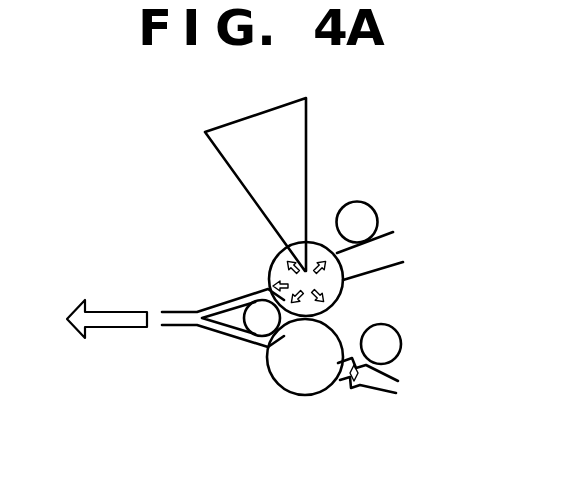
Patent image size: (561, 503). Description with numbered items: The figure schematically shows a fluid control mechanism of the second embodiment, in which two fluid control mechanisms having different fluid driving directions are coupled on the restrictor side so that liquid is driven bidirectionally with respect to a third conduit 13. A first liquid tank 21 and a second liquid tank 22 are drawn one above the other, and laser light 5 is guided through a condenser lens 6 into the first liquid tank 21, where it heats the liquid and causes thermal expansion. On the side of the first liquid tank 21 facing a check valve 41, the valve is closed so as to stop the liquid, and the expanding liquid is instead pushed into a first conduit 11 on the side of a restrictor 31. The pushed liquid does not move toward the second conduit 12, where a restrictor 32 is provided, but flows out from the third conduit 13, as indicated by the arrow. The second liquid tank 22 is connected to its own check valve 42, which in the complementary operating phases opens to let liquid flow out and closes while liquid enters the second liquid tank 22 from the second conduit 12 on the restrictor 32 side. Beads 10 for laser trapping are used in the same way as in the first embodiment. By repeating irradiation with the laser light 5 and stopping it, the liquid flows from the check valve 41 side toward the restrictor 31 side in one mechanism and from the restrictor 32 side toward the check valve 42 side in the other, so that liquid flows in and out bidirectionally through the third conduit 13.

The laser light 5 is at (243, 130).
The condenser lens 6 is at (293, 238).
The beads 10 is at (370, 212).
The first conduit 11 is at (220, 305).
The second conduit 12 is at (222, 337).
The third conduit 13 is at (167, 311).
The first liquid tank 21 is at (322, 241).
The second liquid tank 22 is at (320, 380).
The restrictor 31 is at (265, 288).
The restrictor 32 is at (268, 352).
The check valve 41 is at (352, 279).
The check valve 42 is at (357, 390).